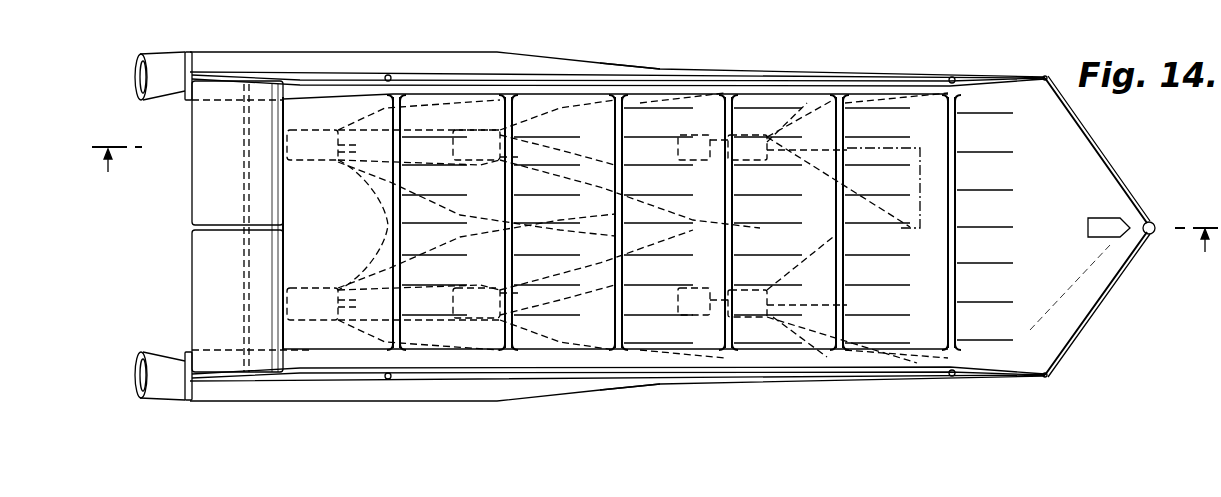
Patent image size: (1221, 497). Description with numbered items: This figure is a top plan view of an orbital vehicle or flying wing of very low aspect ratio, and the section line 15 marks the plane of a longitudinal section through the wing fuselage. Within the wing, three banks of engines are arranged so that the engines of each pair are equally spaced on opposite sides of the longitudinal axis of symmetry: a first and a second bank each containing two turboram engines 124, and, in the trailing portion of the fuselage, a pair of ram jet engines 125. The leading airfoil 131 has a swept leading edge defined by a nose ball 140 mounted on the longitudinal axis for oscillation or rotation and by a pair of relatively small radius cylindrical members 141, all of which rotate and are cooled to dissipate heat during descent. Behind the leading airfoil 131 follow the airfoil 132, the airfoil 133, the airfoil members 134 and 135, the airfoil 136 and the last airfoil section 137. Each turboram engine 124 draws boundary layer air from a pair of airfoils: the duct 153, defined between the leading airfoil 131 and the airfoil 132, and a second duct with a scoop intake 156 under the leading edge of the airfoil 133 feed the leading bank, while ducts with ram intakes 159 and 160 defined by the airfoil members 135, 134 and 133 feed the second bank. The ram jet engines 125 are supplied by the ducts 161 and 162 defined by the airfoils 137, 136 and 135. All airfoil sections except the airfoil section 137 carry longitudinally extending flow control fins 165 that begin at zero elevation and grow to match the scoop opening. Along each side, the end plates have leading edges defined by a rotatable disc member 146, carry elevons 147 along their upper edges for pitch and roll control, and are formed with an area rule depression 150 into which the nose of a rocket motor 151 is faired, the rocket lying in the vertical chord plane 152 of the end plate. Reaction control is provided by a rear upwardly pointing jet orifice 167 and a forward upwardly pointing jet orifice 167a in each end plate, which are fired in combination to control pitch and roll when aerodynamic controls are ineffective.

The section line 15 is at (652, 208).
The turboram engine 124 is at (554, 181).
The ram jet engine 125 is at (311, 184).
The leading airfoil 131 is at (1033, 352).
The airfoil 132 is at (915, 355).
The airfoil 133 is at (810, 355).
The airfoil member 134 is at (688, 331).
The airfoil member 135 is at (598, 333).
The airfoil 136 is at (476, 333).
The airfoil section 137 is at (369, 333).
The nose ball 140 is at (1153, 227).
The cylindrical member 141 is at (1083, 118).
The rotatable disc member 146 is at (1063, 66).
The elevon 147 is at (200, 279).
The area rule depression 150 is at (754, 386).
The rocket motor 151 is at (245, 44).
The vertical chord plane 152 is at (610, 78).
The duct 153 is at (817, 170).
The scoop intake 156 is at (810, 208).
The ram intake 159 is at (681, 205).
The ram intake 160 is at (573, 212).
The duct 161 is at (415, 270).
The duct 162 is at (365, 250).
The flow control fin 165 is at (450, 131).
The upwardly pointing jet orifice 167 is at (393, 77).
The forward upwardly pointing jet orifice 167a is at (966, 66).